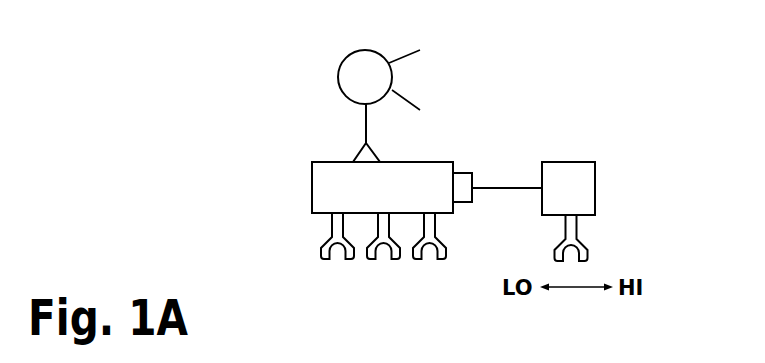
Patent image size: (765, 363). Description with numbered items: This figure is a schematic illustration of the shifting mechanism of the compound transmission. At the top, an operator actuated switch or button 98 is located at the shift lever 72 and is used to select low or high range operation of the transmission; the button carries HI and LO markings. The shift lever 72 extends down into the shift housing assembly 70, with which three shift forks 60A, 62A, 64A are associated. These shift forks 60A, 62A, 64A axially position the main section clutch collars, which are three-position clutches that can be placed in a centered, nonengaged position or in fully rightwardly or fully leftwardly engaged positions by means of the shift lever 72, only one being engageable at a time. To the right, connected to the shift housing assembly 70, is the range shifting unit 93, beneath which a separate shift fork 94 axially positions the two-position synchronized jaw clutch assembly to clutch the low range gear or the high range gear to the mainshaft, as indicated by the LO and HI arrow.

The operator actuated switch or button 98 is at (399, 52).
The shift lever 72 is at (365, 113).
The shift housing assembly 70 is at (330, 188).
The shift fork 60A is at (331, 228).
The shift fork 62A is at (390, 228).
The shift fork 64A is at (436, 228).
The remote unit 93 is at (577, 172).
The shift fork 94 is at (578, 225).